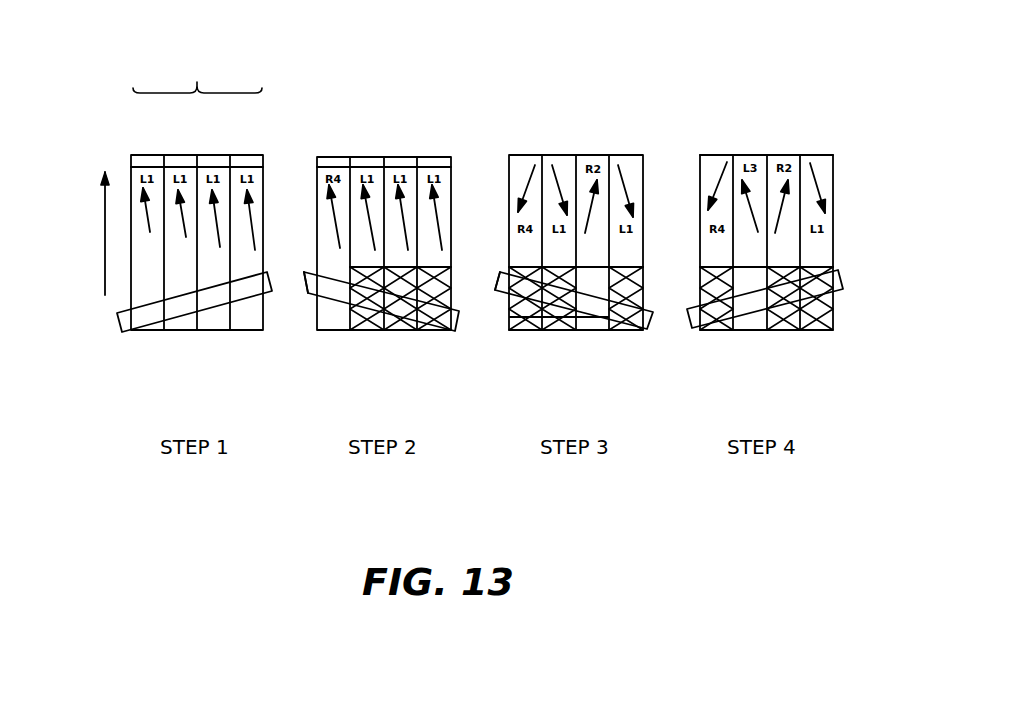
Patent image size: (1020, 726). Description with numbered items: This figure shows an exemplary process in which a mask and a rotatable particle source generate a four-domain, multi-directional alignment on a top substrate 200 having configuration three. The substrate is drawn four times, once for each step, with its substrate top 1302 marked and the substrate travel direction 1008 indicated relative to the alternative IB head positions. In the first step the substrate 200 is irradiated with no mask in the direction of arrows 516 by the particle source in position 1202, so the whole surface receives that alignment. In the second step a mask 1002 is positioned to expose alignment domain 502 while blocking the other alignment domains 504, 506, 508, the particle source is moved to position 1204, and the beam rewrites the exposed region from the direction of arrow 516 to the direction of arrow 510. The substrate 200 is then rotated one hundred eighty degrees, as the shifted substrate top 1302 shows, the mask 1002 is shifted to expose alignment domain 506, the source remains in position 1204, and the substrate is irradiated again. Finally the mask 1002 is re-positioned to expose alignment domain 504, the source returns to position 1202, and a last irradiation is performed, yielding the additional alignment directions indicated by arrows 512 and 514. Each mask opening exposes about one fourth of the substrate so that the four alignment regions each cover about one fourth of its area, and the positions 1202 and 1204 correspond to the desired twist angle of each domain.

The top substrate 200 is at (198, 80).
The alignment domain 502 is at (717, 153).
The alignment domain 504 is at (755, 153).
The alignment domain 506 is at (782, 153).
The alignment domain 508 is at (820, 153).
The alignment direction arrow 510 is at (335, 226).
The alignment direction arrow 512 is at (755, 227).
The alignment direction arrow 514 is at (585, 223).
The alignment direction arrow 516 is at (255, 248).
The mask 1002 is at (395, 328).
The substrate travel direction 1008 is at (103, 222).
The alternative particle source position 1202 is at (118, 322).
The alternative particle source position 1204 is at (309, 296).
The substrate top 1302 is at (147, 165).